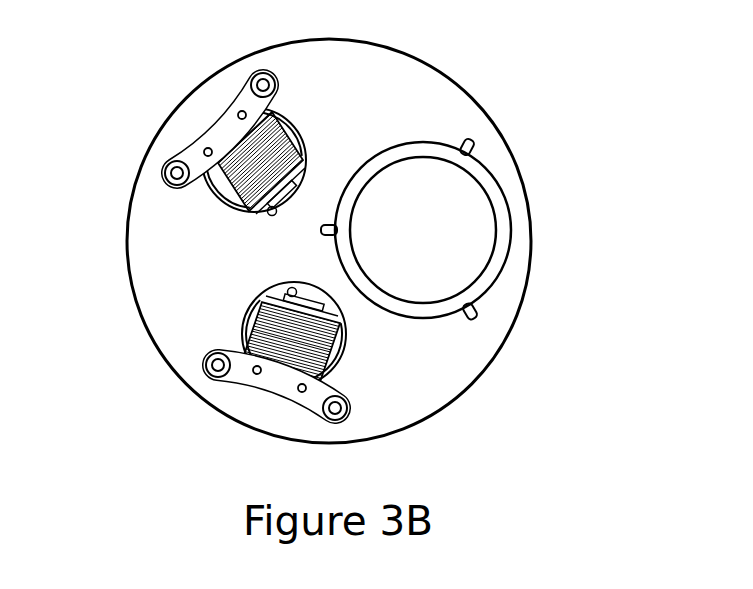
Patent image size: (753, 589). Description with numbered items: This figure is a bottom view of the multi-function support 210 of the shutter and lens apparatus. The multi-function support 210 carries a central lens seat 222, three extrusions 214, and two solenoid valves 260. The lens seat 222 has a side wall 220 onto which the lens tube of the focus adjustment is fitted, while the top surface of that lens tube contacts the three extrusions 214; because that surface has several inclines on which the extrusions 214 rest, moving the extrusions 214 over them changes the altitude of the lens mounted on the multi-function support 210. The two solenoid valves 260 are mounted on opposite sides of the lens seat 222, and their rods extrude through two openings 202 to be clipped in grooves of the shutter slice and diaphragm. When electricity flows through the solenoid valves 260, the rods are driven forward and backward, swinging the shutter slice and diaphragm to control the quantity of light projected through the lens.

The multi-function support 210 is at (466, 72).
The extrusions 214 is at (480, 137).
The side wall 220 is at (508, 201).
The lens seat 222 is at (462, 242).
The openings 202 is at (300, 187).
The solenoid valves 260 is at (247, 142).